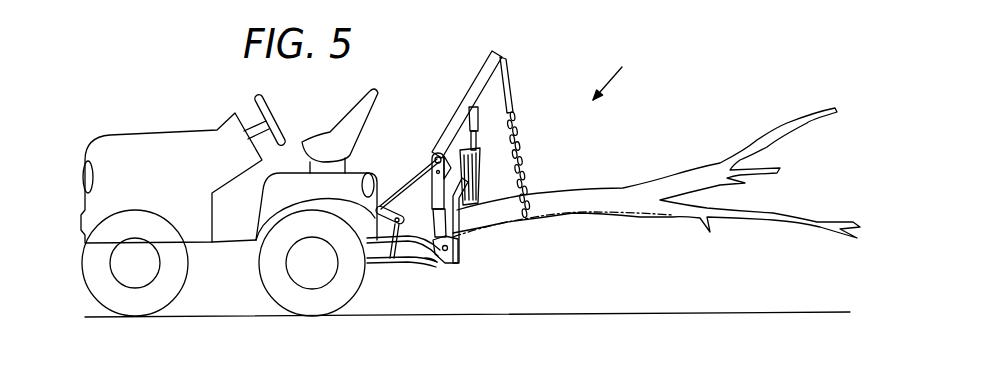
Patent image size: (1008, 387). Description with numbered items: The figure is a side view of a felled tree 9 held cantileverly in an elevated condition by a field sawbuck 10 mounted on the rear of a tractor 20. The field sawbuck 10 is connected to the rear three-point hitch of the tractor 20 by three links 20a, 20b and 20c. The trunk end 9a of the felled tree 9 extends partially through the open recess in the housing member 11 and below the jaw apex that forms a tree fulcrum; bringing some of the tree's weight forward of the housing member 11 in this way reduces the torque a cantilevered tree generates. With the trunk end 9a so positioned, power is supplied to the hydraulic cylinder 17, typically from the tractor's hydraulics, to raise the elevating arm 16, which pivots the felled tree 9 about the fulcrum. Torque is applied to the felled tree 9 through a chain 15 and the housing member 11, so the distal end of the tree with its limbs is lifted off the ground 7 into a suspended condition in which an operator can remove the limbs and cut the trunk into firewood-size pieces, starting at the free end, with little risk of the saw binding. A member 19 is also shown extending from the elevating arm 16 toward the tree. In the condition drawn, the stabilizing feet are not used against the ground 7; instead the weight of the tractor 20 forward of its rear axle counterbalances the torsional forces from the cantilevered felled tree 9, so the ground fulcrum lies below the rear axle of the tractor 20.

The ground 7 is at (618, 312).
The felled tree 9 is at (620, 197).
The trunk end 9a is at (430, 262).
The field sawbuck 10 is at (620, 68).
The housing member 11 is at (452, 219).
The chain 15 is at (528, 180).
The elevating arm 16 is at (470, 102).
The hydraulic cylinder 17 is at (475, 172).
The lifting chain 19 is at (508, 90).
The tractor 20 is at (198, 143).
The link 20a is at (417, 264).
The link 20b is at (404, 264).
The link 20c is at (402, 190).